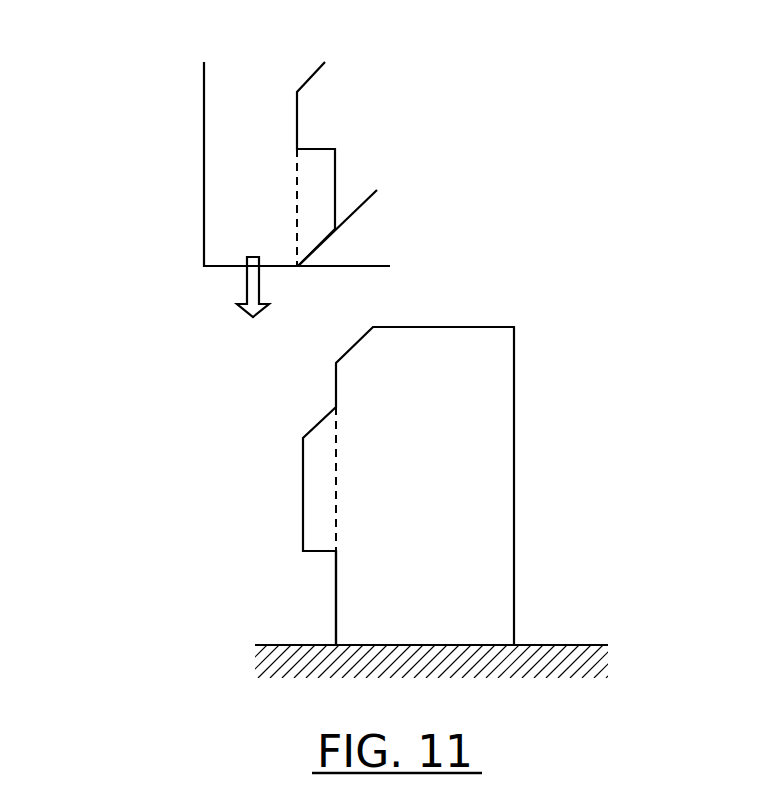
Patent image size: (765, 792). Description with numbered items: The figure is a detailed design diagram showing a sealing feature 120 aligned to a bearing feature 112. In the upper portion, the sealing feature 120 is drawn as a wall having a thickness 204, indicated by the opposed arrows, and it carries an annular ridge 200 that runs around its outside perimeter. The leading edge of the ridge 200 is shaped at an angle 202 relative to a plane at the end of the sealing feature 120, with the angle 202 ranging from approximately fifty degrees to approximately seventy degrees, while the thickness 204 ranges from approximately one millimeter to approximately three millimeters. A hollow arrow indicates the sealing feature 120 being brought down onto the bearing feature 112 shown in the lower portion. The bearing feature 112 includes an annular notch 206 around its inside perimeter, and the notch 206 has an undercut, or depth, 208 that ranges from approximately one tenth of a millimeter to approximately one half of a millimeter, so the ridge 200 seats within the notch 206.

The bearing feature 112 is at (517, 432).
The sealing feature 120 is at (203, 200).
The annular ridge 200 is at (337, 178).
The angle 202 is at (359, 214).
The thickness 204 is at (374, 117).
The annular notch 206 is at (317, 603).
The undercut 208 is at (412, 491).